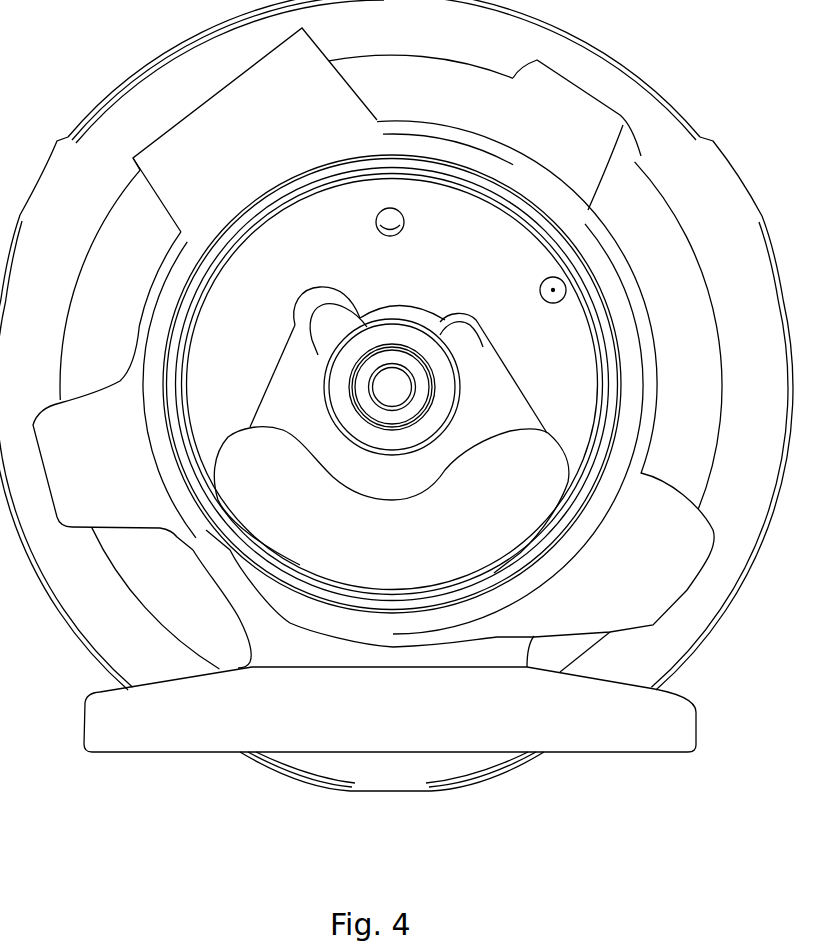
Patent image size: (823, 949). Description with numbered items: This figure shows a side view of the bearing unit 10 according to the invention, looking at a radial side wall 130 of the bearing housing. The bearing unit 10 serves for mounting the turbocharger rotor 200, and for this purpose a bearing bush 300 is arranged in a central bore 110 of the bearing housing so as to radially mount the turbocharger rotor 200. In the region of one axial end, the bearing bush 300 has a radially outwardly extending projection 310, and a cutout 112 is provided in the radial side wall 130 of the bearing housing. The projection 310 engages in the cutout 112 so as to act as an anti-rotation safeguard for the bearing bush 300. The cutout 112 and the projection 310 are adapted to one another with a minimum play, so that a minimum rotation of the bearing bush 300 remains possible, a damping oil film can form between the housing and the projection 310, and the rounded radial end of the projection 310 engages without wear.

The bearing unit 10 is at (103, 78).
The central bore 110 is at (417, 443).
The cutout 112 is at (328, 298).
The radial side wall 130 is at (583, 399).
The turbocharger rotor 200 is at (392, 387).
The bearing bush 300 is at (413, 343).
The projection 310 is at (352, 318).